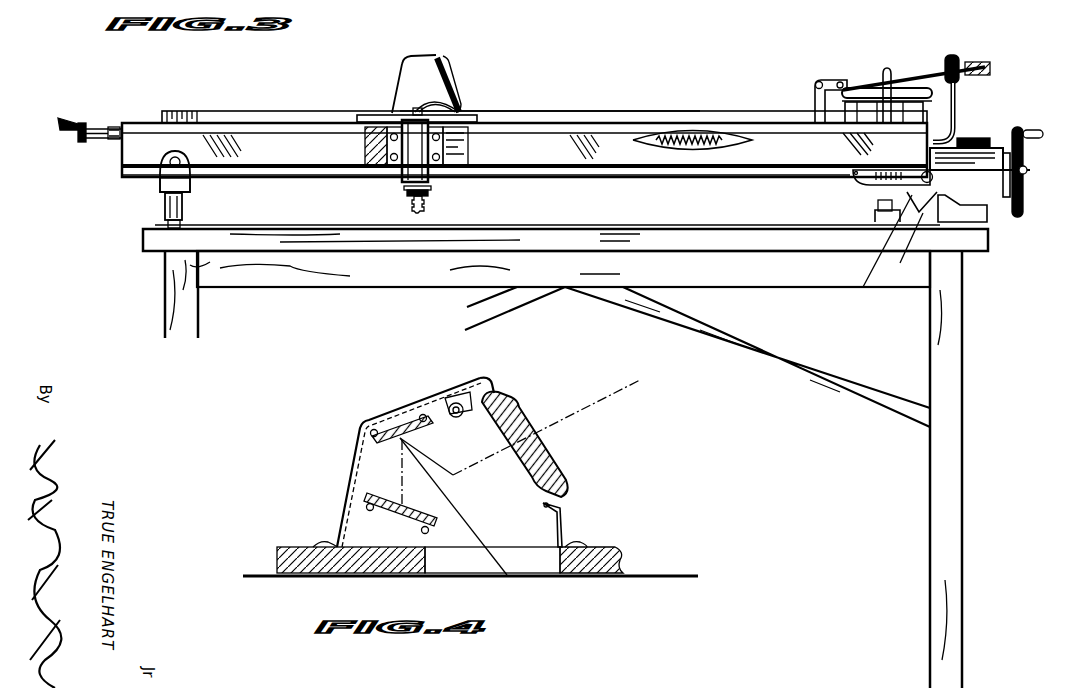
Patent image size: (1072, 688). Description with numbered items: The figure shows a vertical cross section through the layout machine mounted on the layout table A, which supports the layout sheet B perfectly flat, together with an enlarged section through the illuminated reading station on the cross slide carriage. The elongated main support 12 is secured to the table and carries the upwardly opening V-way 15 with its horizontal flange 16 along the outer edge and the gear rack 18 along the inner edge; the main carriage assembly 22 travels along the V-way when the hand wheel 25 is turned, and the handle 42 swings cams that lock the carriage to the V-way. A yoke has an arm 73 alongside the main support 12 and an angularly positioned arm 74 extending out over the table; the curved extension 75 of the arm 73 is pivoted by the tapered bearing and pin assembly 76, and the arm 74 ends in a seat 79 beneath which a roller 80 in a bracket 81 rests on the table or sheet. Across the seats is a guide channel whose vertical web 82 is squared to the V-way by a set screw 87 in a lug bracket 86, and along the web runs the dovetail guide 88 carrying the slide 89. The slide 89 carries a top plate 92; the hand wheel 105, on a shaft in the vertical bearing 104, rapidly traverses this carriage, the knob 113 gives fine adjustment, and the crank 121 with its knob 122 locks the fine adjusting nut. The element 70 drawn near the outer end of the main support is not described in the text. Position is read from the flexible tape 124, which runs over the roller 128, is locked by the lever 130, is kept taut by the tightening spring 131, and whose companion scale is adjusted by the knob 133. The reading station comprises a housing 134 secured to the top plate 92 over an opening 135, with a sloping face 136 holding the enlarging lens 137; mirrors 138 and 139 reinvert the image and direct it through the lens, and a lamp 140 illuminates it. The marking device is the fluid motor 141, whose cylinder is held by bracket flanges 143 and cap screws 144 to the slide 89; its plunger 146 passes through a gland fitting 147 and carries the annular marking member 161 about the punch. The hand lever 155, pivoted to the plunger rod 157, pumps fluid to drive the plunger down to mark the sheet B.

In FIG. 3, the main support 12 is at (867, 217).
In FIG. 3, the V-way 15 is at (883, 256).
In FIG. 3, the flange 16 is at (962, 208).
In FIG. 3, the gear rack 18 is at (877, 204).
In FIG. 3, the main carriage assembly 22 is at (1007, 150).
In FIG. 3, the hand wheel 25 is at (1020, 126).
In FIG. 3, the handle 42 is at (1028, 170).
In FIG. 3, the tailstock body 70 is at (998, 148).
In FIG. 3, the arm 73 is at (855, 101).
In FIG. 3, the arm 74 is at (548, 112).
In FIG. 3, the curved extension 75 is at (852, 176).
In FIG. 3, the tapered bearing and pin assembly 76 is at (918, 235).
In FIG. 3, the seat 79 is at (160, 186).
In FIG. 3, the roller 80 is at (183, 219).
In FIG. 3, the bracket 81 is at (190, 190).
In FIG. 3, the vertical web 82 is at (266, 126).
In FIG. 3, the lug bracket 86 is at (180, 158).
In FIG. 3, the set screw 87 is at (169, 157).
In FIG. 3, the dovetail guide 88 is at (607, 140).
In FIG. 3, the slide 89 is at (468, 160).
In FIG. 3, the top plate 92 is at (468, 118).
In FIG. 4, the top plate 92 is at (612, 547).
In FIG. 3, the vertical bearing 104 is at (895, 106).
In FIG. 3, the hand wheel 105 is at (898, 87).
In FIG. 3, the knob 113 is at (961, 136).
In FIG. 3, the crank 121 is at (960, 92).
In FIG. 3, the knob 122 is at (961, 60).
In FIG. 3, the flexible tape 124 is at (102, 124).
In FIG. 4, the flexible tape 124 is at (688, 574).
In FIG. 3, the roller 128 is at (100, 144).
In FIG. 3, the lever 130 is at (57, 126).
In FIG. 3, the tightening spring 131 is at (712, 130).
In FIG. 3, the knob 133 is at (79, 141).
In FIG. 3, the housing 134 is at (400, 71).
In FIG. 4, the housing 134 is at (340, 486).
In FIG. 4, the opening 135 is at (540, 575).
In FIG. 4, the sloping face 136 is at (563, 506).
In FIG. 3, the enlarging lens 137 is at (452, 62).
In FIG. 4, the enlarging lens 137 is at (555, 465).
In FIG. 4, the mirror 138 is at (390, 498).
In FIG. 4, the mirror 139 is at (420, 435).
In FIG. 4, the lamp 140 is at (493, 382).
In FIG. 3, the fluid motor 141 is at (387, 184).
In FIG. 3, the bracket flanges 143 is at (368, 151).
In FIG. 3, the cap screws 144 is at (460, 148).
In FIG. 3, the plunger 146 is at (429, 194).
In FIG. 3, the gland fitting 147 is at (403, 193).
In FIG. 3, the hand lever 155 is at (928, 74).
In FIG. 3, the plunger rod 157 is at (817, 79).
In FIG. 3, the annular marking member 161 is at (423, 210).
In FIG. 3, the layout table A is at (276, 268).
In FIG. 3, the layout sheet B is at (295, 227).